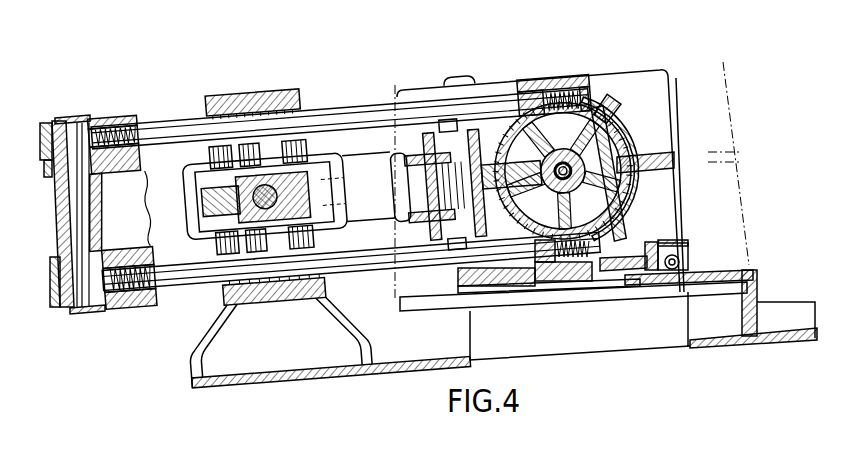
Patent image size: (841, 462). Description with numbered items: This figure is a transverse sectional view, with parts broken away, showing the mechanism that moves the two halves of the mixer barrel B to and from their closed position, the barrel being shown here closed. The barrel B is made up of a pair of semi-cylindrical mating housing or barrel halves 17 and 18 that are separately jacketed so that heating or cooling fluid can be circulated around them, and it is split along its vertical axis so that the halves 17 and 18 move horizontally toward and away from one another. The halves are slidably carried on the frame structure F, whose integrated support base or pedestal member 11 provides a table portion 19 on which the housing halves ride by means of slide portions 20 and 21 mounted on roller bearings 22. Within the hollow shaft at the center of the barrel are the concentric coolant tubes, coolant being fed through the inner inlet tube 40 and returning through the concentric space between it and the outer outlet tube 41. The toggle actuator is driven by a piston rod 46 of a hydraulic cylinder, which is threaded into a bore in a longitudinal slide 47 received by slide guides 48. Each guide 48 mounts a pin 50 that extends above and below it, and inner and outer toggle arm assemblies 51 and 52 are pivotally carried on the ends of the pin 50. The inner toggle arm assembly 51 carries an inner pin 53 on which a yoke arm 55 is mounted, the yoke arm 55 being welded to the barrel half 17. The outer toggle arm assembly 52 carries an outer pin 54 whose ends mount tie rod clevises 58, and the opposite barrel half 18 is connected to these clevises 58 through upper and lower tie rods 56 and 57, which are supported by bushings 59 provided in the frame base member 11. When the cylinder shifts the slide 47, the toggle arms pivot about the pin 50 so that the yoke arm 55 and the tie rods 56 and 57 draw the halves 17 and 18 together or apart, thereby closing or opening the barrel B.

The support base or pedestal member 11 is at (243, 93).
The housing or barrel half 17 is at (514, 98).
The housing or barrel half 18 is at (617, 113).
The table portion 19 is at (597, 292).
The slide portion 20 is at (498, 300).
The slide portion 21 is at (632, 285).
The roller bearing 22 is at (556, 302).
The inner inlet tube 40 is at (632, 218).
The outer outlet tube 41 is at (631, 143).
The piston rod 46 is at (300, 193).
The longitudinal slide 47 is at (232, 200).
The slide guide 48 is at (195, 178).
The pin 50 is at (347, 204).
The inner toggle arm assembly 51 is at (376, 164).
The outer toggle arm assembly 52 is at (147, 201).
The inner pin 53 is at (440, 182).
The outer pin 54 is at (58, 198).
The yoke arm 55 is at (471, 100).
The upper tie rod 56 is at (366, 110).
The lower tie rod 57 is at (361, 276).
The tie rod clevis 58 is at (106, 124).
The bushing 59 is at (304, 92).
The mixer barrel B is at (630, 120).
The frame structure F is at (222, 404).